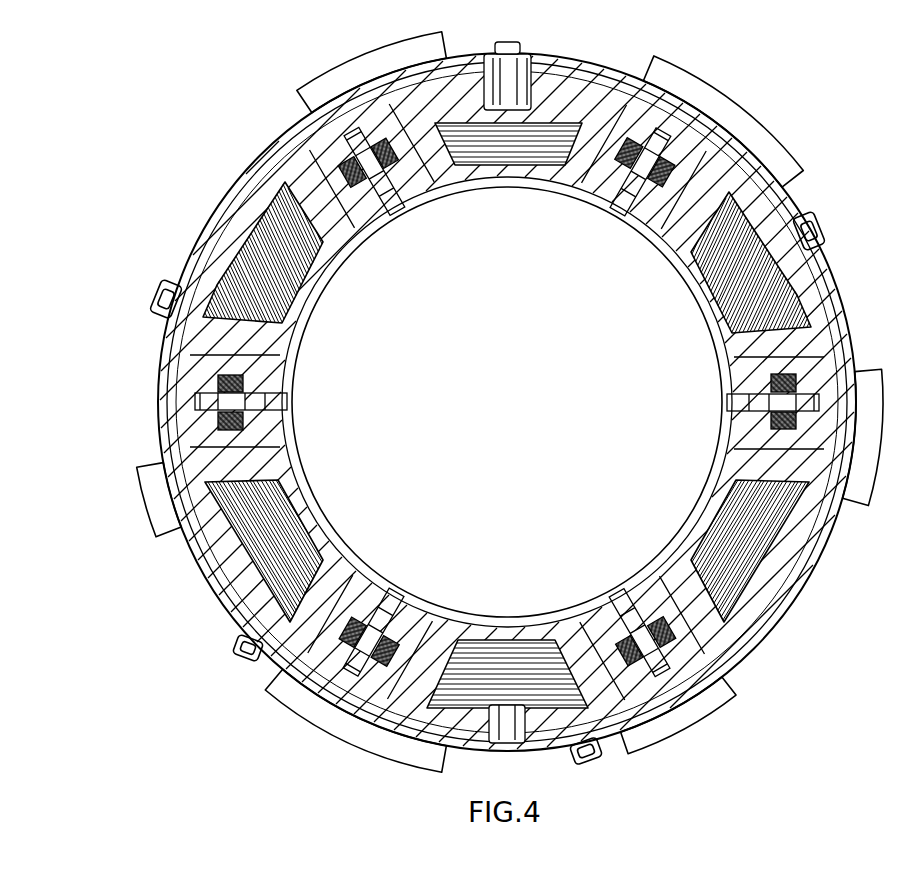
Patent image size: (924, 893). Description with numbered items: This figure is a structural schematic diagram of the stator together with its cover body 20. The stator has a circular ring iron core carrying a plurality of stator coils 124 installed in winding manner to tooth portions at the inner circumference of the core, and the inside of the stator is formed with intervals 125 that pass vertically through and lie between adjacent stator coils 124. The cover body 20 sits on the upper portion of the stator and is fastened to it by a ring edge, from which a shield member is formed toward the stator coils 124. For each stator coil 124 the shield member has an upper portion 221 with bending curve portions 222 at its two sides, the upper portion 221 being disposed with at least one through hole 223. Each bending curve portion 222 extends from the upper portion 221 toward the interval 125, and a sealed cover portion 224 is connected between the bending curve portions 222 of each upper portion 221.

The cover body 20 is at (774, 186).
The stator coil 124 is at (303, 243).
The interval 125 is at (323, 98).
The upper portion 221 is at (285, 322).
The bending curve portion 222 is at (332, 112).
The through hole 223 is at (455, 110).
The sealed cover portion 224 is at (398, 205).